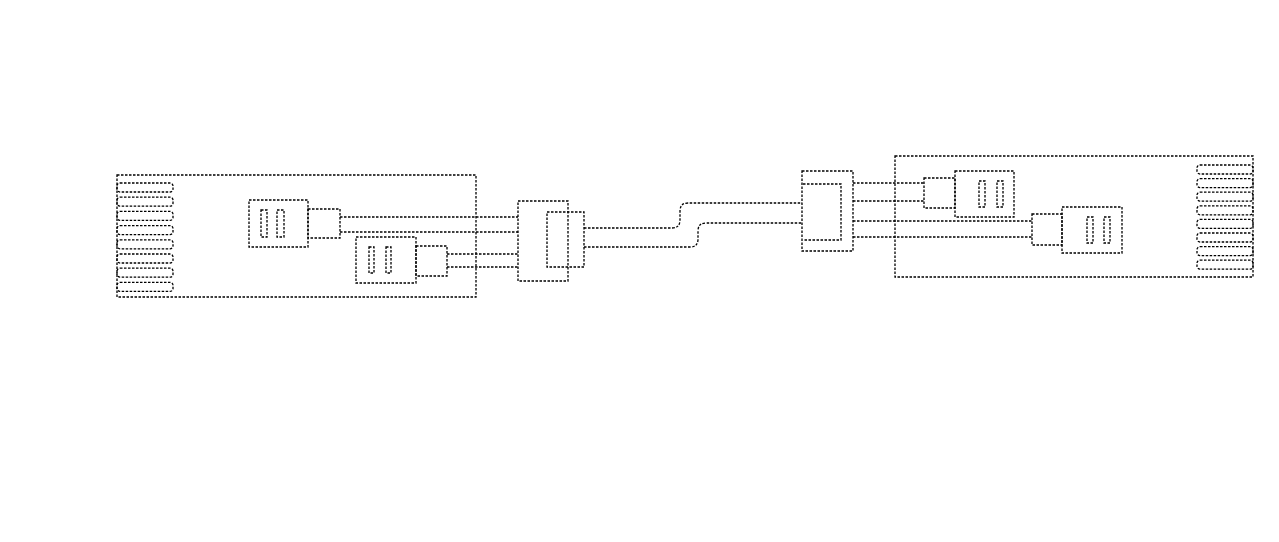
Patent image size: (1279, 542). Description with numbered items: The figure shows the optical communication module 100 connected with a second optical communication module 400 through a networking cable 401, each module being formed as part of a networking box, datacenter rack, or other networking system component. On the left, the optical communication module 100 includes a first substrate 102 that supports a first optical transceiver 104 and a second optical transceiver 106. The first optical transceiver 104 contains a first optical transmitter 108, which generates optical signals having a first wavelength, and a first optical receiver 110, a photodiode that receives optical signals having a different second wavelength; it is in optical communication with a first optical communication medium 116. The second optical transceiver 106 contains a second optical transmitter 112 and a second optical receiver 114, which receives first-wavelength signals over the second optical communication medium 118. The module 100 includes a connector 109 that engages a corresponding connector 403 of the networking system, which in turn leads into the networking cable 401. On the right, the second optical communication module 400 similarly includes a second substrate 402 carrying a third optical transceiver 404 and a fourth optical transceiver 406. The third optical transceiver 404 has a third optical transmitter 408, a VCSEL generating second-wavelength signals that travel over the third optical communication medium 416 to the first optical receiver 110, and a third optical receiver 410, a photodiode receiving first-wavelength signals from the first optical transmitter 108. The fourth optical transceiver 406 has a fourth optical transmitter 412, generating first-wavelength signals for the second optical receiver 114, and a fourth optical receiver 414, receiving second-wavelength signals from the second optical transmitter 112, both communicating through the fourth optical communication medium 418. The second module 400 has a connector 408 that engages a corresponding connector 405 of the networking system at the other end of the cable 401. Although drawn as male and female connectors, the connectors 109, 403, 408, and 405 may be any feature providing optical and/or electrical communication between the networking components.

The optical communication module 100 is at (335, 34).
The first substrate 102 is at (204, 186).
The first optical transceiver 104 is at (257, 197).
The second optical transceiver 106 is at (356, 284).
The first optical transmitter 108 is at (265, 208).
The connector 109 is at (552, 200).
The first optical receiver 110 is at (282, 208).
The second optical transmitter 112 is at (393, 271).
The second optical receiver 114 is at (373, 276).
The first optical communication medium 116 is at (401, 216).
The second optical communication medium 118 is at (490, 276).
The second optical communication module 400 is at (1093, 24).
The networking cable 401 is at (685, 202).
The second substrate 402 is at (1186, 159).
The connector 403 is at (588, 210).
The third optical transceiver 404 is at (1014, 157).
The connector 405 is at (800, 197).
The fourth optical transceiver 406 is at (1122, 256).
The third optical transmitter 408 is at (819, 170).
The third optical receiver 410 is at (1001, 178).
The fourth optical transmitter 412 is at (1106, 250).
The fourth optical receiver 414 is at (1086, 250).
The third optical communication medium 416 is at (879, 184).
The fourth optical communication medium 418 is at (967, 240).